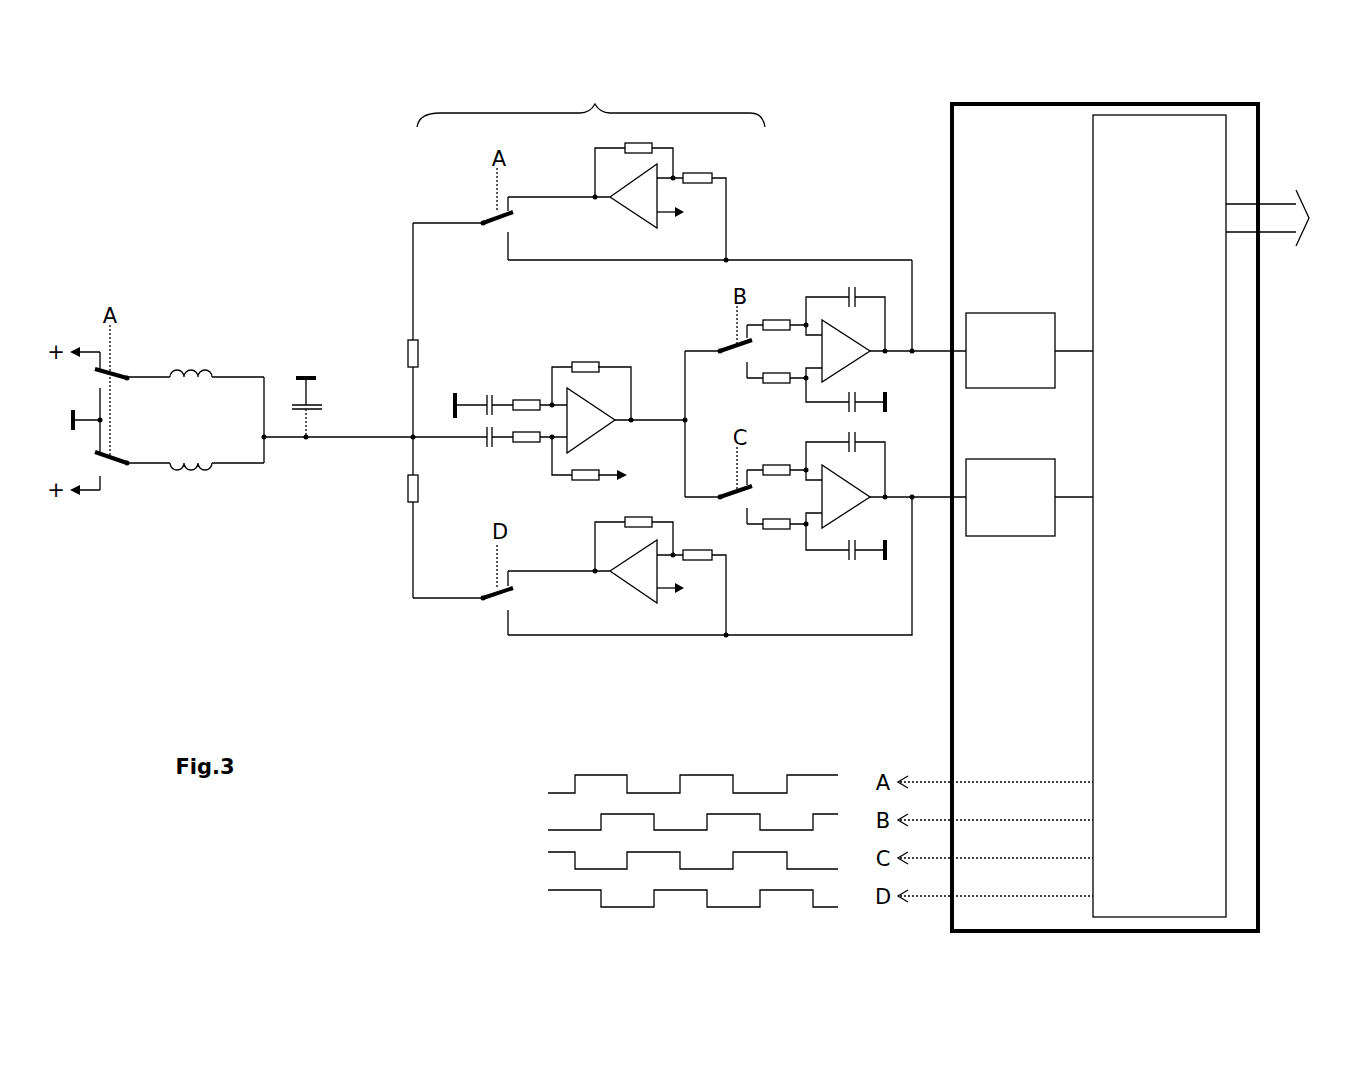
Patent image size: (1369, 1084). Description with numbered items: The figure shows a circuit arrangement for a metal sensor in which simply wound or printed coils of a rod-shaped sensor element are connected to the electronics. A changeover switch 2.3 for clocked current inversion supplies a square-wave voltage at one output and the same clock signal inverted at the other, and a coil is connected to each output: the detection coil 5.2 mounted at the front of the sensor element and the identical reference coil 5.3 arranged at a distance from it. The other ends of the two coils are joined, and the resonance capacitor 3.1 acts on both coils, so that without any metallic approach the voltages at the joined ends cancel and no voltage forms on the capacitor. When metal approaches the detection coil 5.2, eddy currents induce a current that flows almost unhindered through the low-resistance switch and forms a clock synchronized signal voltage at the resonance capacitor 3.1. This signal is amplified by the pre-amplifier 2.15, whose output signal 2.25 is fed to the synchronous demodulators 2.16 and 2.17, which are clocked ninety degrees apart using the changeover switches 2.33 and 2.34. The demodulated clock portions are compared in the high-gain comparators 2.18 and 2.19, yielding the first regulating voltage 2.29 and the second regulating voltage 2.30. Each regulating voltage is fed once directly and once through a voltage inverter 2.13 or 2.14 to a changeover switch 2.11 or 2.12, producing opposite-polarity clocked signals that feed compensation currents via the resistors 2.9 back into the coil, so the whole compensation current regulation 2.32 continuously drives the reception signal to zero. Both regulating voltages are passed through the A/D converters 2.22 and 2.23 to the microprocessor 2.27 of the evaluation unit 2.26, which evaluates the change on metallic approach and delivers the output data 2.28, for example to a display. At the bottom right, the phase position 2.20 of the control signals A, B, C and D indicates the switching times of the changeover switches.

The changeover switch 2.3 is at (118, 455).
The detection coil 5.2 is at (190, 388).
The reference coil 5.3 is at (195, 478).
The resonance capacitor 3.1 is at (297, 392).
The resistors 2.9 is at (418, 352).
The changeover switch 2.11 is at (490, 212).
The changeover switch 2.12 is at (497, 605).
The voltage inverter 2.13 is at (627, 194).
The voltage inverter 2.14 is at (636, 570).
The pre-amplifier 2.15 is at (598, 410).
The synchronous demodulator 2.16 is at (765, 345).
The synchronous demodulator 2.17 is at (765, 495).
The high-gain comparator 2.18 is at (847, 345).
The high-gain comparator 2.19 is at (847, 497).
The phase position of the control signals 2.20 is at (528, 840).
The A/D converter 2.22 is at (998, 322).
The A/D converter 2.23 is at (1013, 520).
The output signal 2.25 is at (686, 418).
The evaluation unit 2.26 is at (972, 152).
The microprocessor 2.27 is at (1200, 180).
The output data 2.28 is at (1293, 218).
The first regulating voltage 2.29 is at (912, 356).
The second regulating voltage 2.30 is at (815, 637).
The compensation current regulation 2.32 is at (591, 103).
The changeover switch 2.33 is at (727, 346).
The changeover switch 2.34 is at (735, 496).